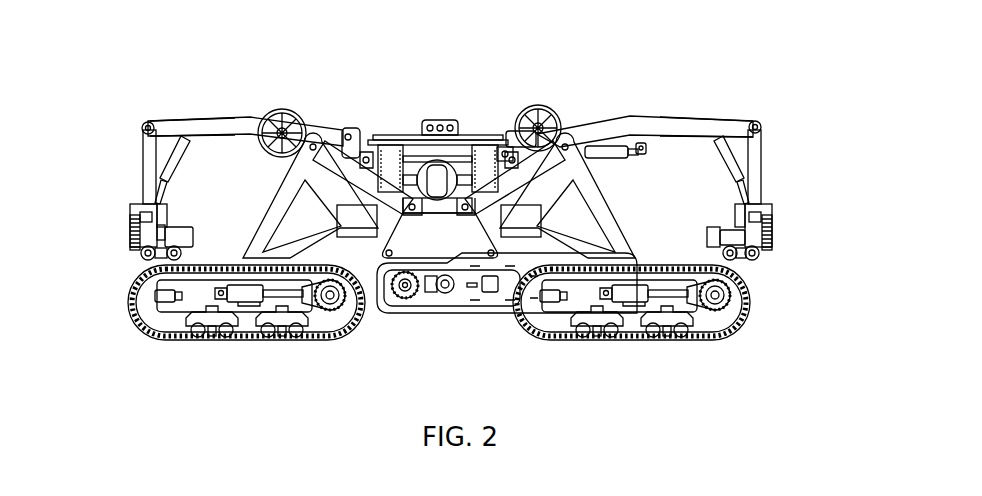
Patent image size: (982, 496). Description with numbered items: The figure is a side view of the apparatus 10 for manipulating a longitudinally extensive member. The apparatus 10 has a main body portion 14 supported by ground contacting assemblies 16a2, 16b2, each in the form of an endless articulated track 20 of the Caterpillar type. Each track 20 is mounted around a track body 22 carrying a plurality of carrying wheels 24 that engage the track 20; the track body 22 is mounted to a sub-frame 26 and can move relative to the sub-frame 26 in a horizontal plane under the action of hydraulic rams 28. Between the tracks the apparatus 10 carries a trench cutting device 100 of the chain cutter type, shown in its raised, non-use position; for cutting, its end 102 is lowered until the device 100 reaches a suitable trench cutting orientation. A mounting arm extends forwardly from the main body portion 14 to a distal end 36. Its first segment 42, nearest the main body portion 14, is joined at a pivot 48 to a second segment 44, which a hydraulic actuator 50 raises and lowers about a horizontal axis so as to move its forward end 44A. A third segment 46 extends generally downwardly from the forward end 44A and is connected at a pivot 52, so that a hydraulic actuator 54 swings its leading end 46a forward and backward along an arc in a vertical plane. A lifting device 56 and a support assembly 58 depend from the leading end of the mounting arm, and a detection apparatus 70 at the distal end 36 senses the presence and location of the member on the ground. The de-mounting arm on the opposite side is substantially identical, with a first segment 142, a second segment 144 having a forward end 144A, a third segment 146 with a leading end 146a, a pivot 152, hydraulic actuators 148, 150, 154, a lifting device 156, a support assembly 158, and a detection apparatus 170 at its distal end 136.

The apparatus 10 is at (530, 88).
The main body portion 14 is at (426, 245).
The ground contacting assembly 16a2 is at (248, 341).
The ground contacting assembly 16b2 is at (685, 338).
The endless articulated track 20 is at (307, 341).
The track body 22 is at (192, 296).
The carrying wheels 24 is at (213, 342).
The sub-frame 26 is at (330, 182).
The hydraulic rams 28 is at (292, 293).
The distal end 36 is at (153, 200).
The first segment 42 is at (377, 134).
The second segment 44 is at (245, 111).
The forward end 44A is at (170, 126).
The third segment 46 is at (143, 154).
The leading end 46a is at (145, 206).
The pivot 48 is at (346, 131).
The hydraulic actuator 50 is at (262, 152).
The pivot 52 is at (145, 124).
The hydraulic actuator 54 is at (173, 158).
The lifting device 56 is at (132, 239).
The support assembly 58 is at (194, 233).
The detection apparatus 70 is at (150, 258).
The trench cutting device 100 is at (437, 314).
The end 102 is at (616, 242).
The distal end 136 is at (774, 197).
The first segment 142 is at (516, 134).
The second segment 144 is at (645, 95).
The forward end 144A is at (717, 124).
The third segment 146 is at (752, 163).
The leading end 146a is at (752, 198).
The hydraulic actuator 148 is at (546, 112).
The hydraulic actuator 150 is at (607, 156).
The pivot 152 is at (756, 122).
The hydraulic actuator 154 is at (727, 155).
The lifting device 156 is at (764, 231).
The support assembly 158 is at (736, 291).
The detection apparatus 170 is at (772, 244).